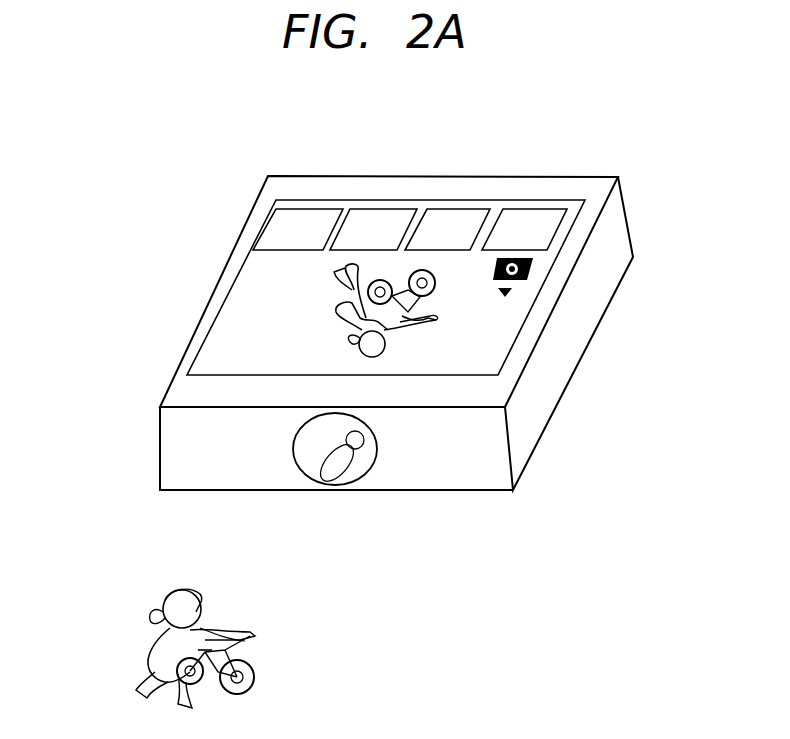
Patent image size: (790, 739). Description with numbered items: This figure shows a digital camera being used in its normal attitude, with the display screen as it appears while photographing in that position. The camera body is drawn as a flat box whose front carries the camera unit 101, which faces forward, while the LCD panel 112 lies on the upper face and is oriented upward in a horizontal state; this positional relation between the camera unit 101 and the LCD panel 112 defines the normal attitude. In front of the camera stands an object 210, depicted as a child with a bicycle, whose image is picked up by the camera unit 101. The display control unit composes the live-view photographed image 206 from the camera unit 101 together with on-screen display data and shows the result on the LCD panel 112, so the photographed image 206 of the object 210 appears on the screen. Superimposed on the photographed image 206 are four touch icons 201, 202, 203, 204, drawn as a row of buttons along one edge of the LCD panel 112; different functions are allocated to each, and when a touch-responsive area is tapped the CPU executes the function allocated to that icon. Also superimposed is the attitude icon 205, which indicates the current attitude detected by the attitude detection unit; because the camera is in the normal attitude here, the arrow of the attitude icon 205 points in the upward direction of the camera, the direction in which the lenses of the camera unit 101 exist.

The camera unit 101 is at (358, 465).
The LCD panel 112 is at (205, 338).
The touch icon 201 is at (302, 215).
The touch icon 202 is at (380, 215).
The touch icon 203 is at (452, 215).
The touch icon 204 is at (527, 215).
The attitude icon 205 is at (533, 270).
The photographed image 206 is at (313, 286).
The object 210 is at (173, 590).